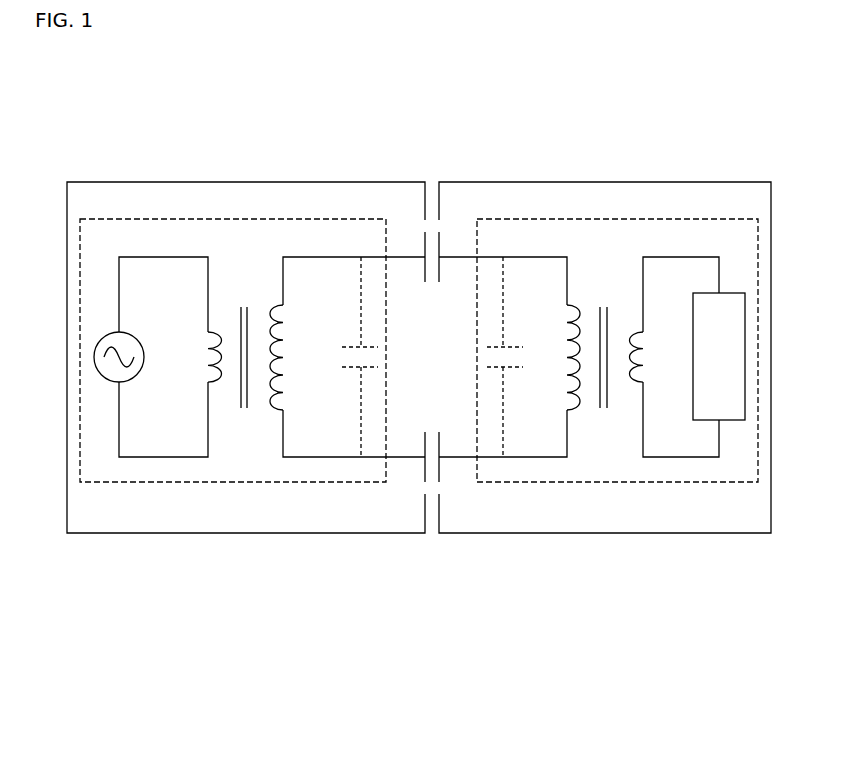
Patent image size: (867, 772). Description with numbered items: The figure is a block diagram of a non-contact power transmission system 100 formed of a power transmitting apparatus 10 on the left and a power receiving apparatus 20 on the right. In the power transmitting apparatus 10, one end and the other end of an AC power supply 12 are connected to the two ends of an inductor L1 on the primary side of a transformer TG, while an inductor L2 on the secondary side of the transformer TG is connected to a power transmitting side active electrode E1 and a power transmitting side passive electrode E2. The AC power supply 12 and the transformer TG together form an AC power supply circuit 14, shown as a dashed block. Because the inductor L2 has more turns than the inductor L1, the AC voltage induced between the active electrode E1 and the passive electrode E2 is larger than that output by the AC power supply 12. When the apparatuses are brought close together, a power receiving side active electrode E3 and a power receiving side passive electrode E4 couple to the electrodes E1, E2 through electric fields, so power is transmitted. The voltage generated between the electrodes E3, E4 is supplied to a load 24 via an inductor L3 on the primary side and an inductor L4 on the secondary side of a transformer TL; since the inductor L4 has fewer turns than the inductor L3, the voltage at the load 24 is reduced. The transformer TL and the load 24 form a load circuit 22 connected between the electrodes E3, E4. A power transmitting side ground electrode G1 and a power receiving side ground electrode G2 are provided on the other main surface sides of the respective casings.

The non-contact power transmission system 100 is at (88, 143).
The power transmitting apparatus 10 is at (67, 585).
The power receiving apparatus 20 is at (439, 585).
The AC power supply 12 is at (106, 338).
The AC power supply circuit 14 is at (308, 219).
The load circuit 22 is at (575, 218).
The load 24 is at (728, 293).
The power transmitting side ground electrode G1 is at (243, 182).
The power receiving side ground electrode G2 is at (646, 182).
The transformer TG is at (246, 292).
The transformer TL is at (604, 292).
The inductor L1 is at (202, 357).
The inductor L2 is at (347, 357).
The inductor L3 is at (509, 357).
The inductor L4 is at (675, 357).
The power transmitting side active electrode E1 is at (423, 268).
The power transmitting side passive electrode E2 is at (423, 446).
The power receiving side active electrode E3 is at (441, 268).
The power receiving side passive electrode E4 is at (441, 446).